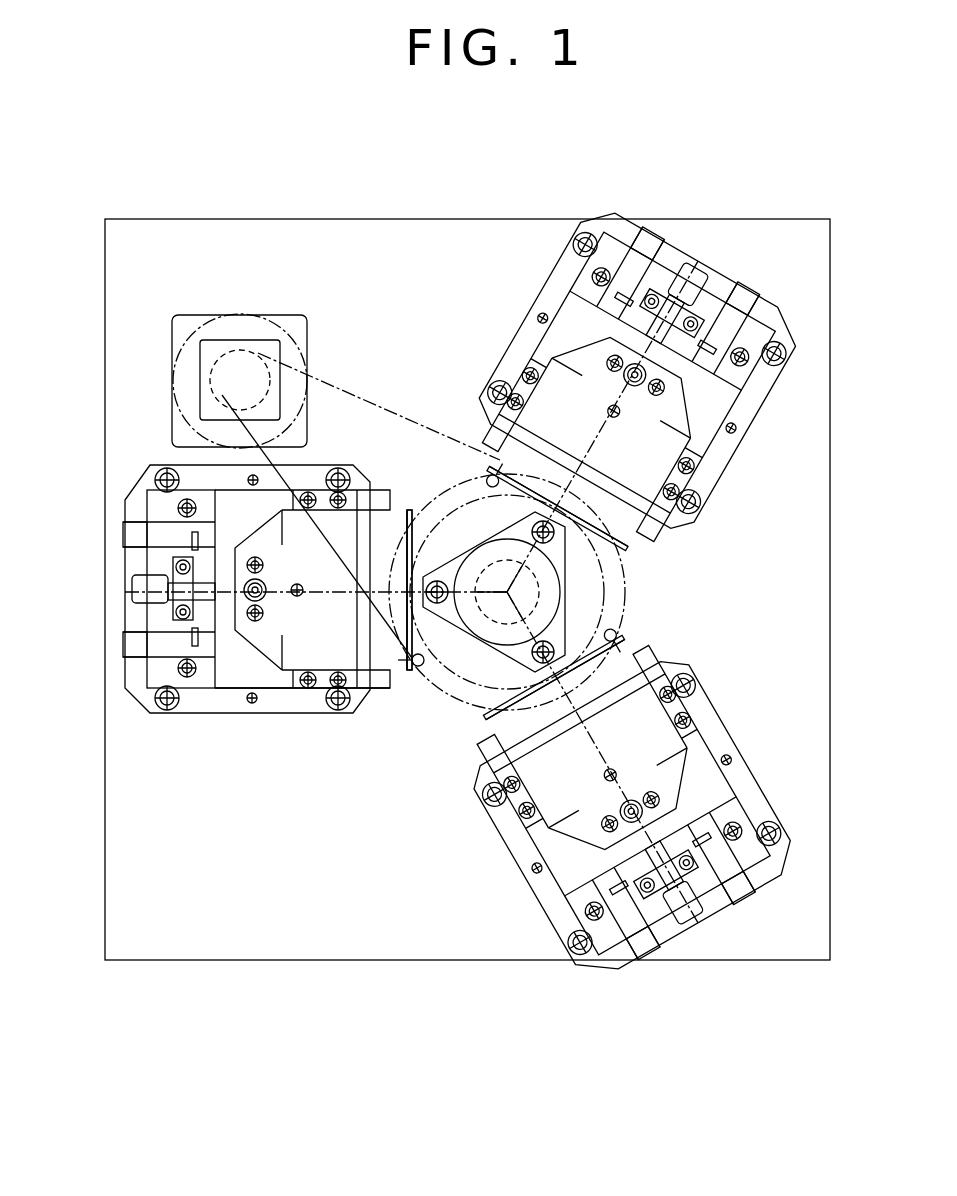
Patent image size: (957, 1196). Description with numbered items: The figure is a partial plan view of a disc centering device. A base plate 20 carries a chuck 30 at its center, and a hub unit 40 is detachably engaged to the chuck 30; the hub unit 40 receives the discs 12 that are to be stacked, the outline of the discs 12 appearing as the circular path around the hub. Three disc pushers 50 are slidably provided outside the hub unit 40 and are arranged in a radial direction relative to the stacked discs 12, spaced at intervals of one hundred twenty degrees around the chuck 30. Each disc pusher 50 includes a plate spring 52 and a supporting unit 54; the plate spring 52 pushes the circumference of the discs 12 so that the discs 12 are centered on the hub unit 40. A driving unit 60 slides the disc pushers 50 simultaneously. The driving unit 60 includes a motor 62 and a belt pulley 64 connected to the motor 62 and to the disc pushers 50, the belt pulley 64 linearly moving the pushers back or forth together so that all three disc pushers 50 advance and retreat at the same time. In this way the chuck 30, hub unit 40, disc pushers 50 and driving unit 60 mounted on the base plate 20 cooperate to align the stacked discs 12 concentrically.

The disc 12 is at (588, 607).
The base plate 20 is at (434, 308).
The chuck 30 is at (574, 577).
The hub unit 40 is at (476, 644).
The disc pusher 50 is at (118, 566).
The plate spring 52 is at (363, 690).
The supporting unit 54 is at (413, 662).
The driving unit 60 is at (166, 364).
The motor 62 is at (232, 327).
The belt pulley 64 is at (358, 398).